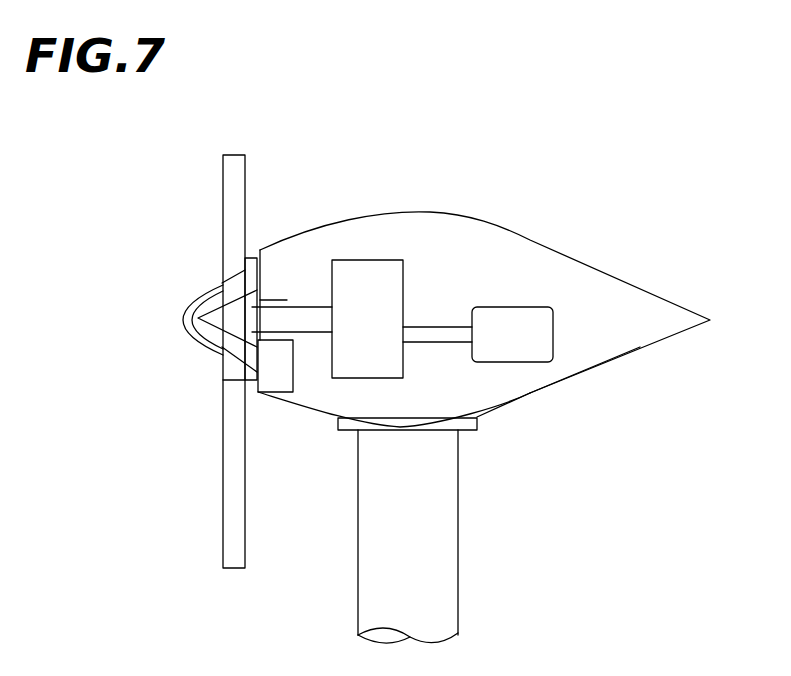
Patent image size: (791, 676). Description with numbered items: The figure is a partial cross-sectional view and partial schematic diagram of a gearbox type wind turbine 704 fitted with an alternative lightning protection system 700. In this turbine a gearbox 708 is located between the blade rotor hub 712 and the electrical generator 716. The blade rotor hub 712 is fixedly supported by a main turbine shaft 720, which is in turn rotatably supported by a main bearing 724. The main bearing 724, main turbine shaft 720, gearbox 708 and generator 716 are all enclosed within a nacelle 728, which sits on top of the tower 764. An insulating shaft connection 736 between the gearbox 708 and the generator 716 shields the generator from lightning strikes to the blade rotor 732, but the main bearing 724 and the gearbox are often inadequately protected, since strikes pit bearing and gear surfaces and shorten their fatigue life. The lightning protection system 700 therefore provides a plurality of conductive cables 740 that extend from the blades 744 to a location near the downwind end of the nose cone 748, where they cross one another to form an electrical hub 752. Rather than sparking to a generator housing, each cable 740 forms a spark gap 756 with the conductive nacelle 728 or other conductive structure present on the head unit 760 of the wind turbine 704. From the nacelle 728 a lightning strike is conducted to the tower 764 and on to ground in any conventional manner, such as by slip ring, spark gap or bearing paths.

The lightning protection system 700 is at (177, 293).
The wind turbine 704 is at (632, 220).
The gearbox 708 is at (362, 277).
The blade rotor hub 712 is at (238, 302).
The electrical generator 716 is at (522, 317).
The main turbine shaft 720 is at (300, 322).
The main bearing 724 is at (272, 332).
The nacelle 728 is at (630, 353).
The blade rotor 732 is at (218, 388).
The insulating shaft connection 736 is at (443, 327).
The conductive cable 740 is at (200, 340).
The blade 744 is at (233, 180).
The nose cone 748 is at (208, 357).
The electrical hub 752 is at (207, 288).
The spark gap 756 is at (262, 250).
The head unit 760 is at (557, 390).
The tower 764 is at (458, 532).